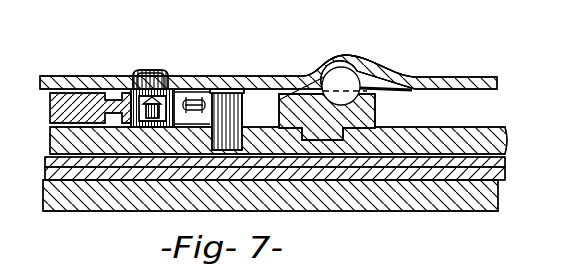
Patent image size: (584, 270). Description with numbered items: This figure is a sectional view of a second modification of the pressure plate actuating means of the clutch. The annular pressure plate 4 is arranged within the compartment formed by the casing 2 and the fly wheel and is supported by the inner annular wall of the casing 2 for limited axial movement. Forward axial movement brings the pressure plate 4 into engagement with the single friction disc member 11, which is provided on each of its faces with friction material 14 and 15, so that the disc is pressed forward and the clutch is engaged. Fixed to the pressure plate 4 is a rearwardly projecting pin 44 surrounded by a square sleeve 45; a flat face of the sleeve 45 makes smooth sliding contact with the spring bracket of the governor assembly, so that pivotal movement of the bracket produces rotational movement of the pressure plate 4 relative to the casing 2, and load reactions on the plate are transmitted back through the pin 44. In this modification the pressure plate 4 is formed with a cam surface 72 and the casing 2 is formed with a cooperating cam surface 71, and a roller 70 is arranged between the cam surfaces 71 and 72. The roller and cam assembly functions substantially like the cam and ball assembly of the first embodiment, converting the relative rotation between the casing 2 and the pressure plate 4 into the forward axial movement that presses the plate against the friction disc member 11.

The casing 2 is at (462, 78).
The pressure plate 4 is at (508, 138).
The friction disc member 11 is at (305, 168).
The friction material 14 is at (495, 160).
The friction material 15 is at (495, 177).
The pin 44 is at (228, 113).
The square sleeve 45 is at (240, 90).
The roller 70 is at (393, 89).
The cam surface 71 is at (376, 64).
The cam surface 72 is at (368, 116).